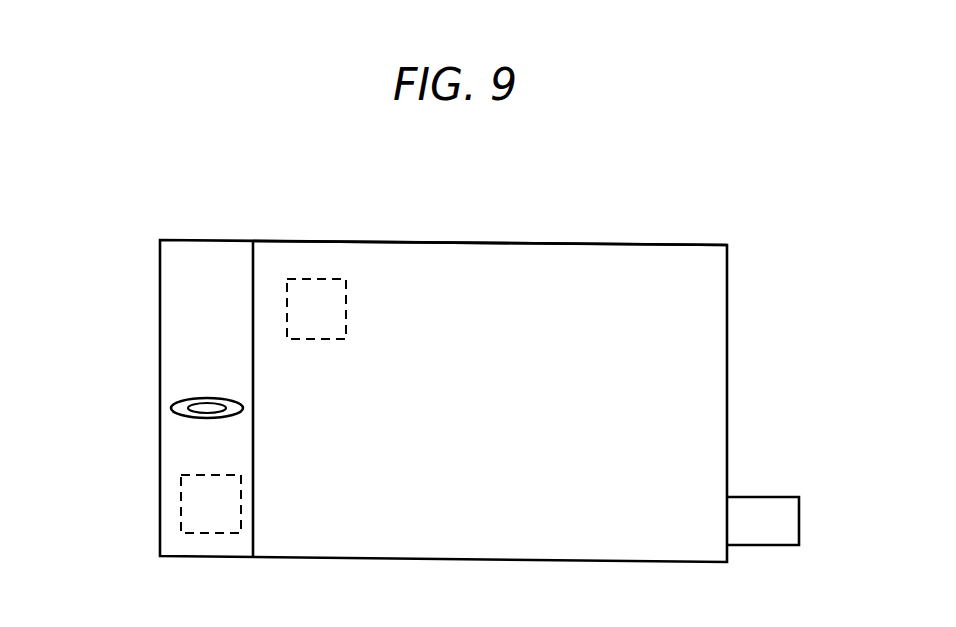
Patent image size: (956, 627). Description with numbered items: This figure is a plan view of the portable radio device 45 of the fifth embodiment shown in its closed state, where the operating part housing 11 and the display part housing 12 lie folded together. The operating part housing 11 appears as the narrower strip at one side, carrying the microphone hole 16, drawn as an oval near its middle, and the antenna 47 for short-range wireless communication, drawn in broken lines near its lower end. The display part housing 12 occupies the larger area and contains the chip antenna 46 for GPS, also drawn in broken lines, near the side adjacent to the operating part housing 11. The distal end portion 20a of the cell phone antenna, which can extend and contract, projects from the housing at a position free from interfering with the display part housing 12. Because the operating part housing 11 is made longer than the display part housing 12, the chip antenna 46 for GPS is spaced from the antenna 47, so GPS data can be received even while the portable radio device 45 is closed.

The portable radio device 45 is at (665, 242).
The operating part housing 11 is at (201, 263).
The display part housing 12 is at (437, 265).
The chip antenna for GPS 46 is at (311, 279).
The antenna for short-range wireless communication 47 is at (181, 505).
The microphone hole 16 is at (207, 398).
The distal end portion 20a is at (762, 533).